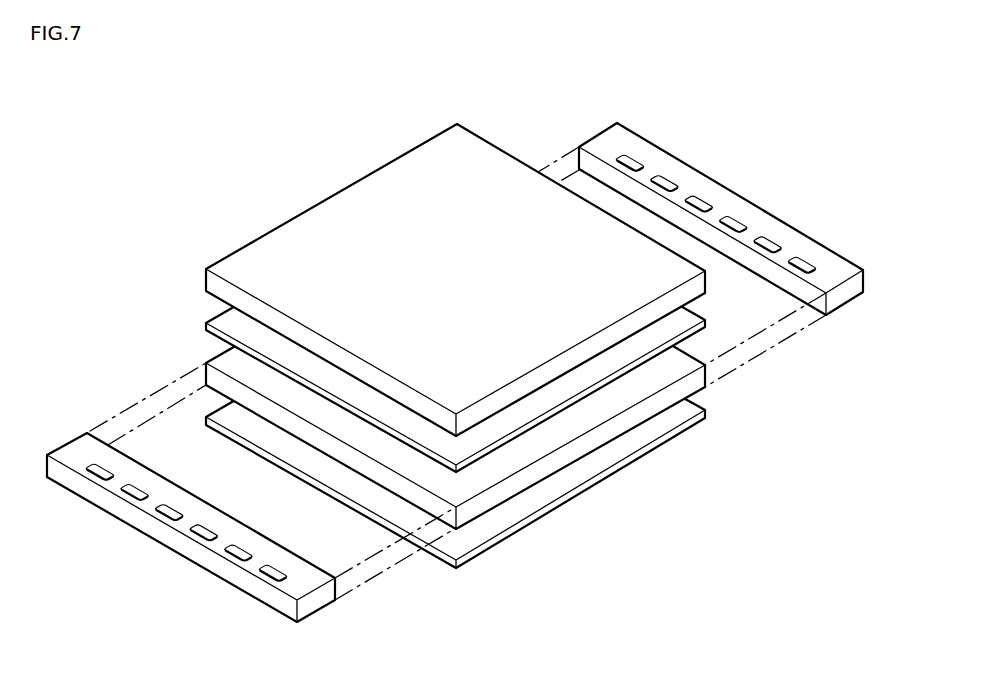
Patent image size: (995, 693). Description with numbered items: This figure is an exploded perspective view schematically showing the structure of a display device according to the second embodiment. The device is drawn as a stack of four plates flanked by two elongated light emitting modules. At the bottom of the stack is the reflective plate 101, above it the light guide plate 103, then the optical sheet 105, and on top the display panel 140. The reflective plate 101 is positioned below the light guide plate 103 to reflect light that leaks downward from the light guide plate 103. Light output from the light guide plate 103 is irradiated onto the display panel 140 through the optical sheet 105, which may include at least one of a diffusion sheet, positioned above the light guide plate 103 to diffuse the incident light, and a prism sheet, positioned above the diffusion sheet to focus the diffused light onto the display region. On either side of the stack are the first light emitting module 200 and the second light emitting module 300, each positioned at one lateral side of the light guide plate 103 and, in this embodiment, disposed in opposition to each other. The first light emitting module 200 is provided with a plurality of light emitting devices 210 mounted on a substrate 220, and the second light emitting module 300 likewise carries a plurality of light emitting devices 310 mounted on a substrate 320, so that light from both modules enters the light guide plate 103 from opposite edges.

The reflective plate 101 is at (205, 423).
The light guide plate 103 is at (206, 375).
The optical sheet 105 is at (205, 327).
The display panel 140 is at (205, 283).
The first light emitting module 200 is at (729, 199).
The light emitting devices 210 is at (804, 256).
The substrate 220 is at (841, 266).
The second light emitting module 300 is at (189, 547).
The light emitting devices 310 is at (95, 475).
The substrate 320 is at (150, 522).